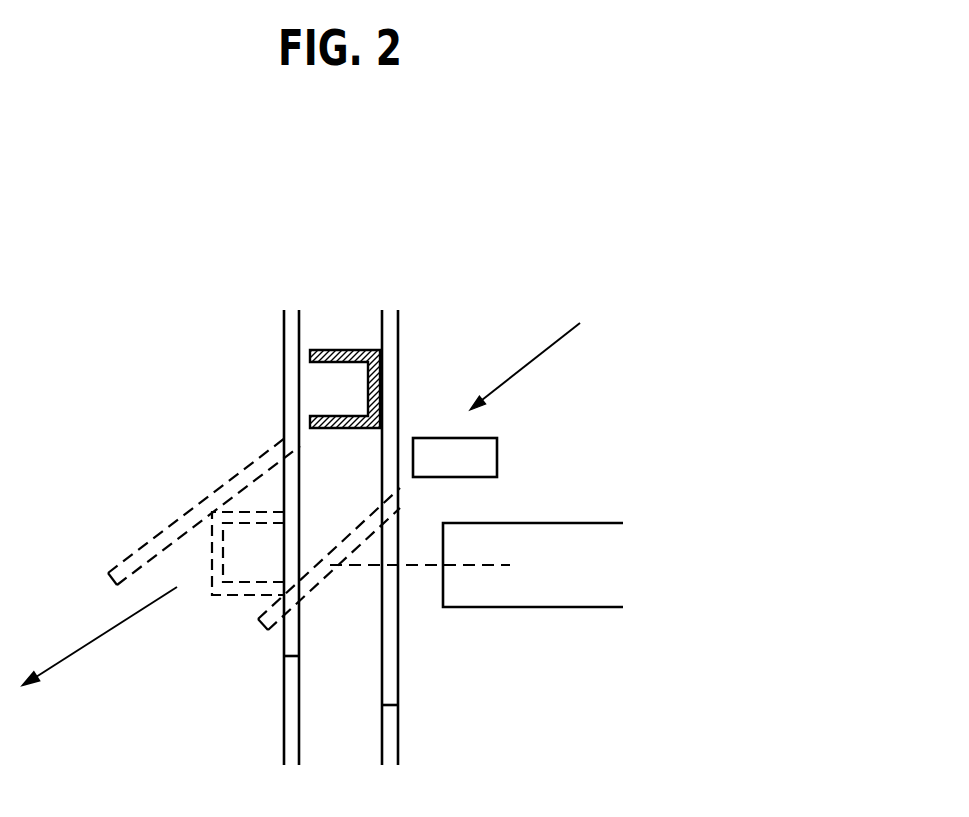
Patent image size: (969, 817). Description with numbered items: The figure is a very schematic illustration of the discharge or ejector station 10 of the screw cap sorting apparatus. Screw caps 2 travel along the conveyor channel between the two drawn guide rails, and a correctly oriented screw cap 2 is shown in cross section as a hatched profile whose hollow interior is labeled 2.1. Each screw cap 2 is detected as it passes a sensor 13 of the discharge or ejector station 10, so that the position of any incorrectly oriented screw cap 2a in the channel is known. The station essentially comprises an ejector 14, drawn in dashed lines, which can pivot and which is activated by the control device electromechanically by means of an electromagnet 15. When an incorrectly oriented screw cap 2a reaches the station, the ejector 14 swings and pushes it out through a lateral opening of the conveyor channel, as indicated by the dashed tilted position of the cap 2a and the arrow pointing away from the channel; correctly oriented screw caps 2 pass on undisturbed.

The screw cap 2 is at (348, 350).
The hollow interior / receiving chamber 2.1 is at (333, 389).
The incorrectly oriented screw cap 2a is at (217, 563).
The discharge or ejector station 10 is at (540, 348).
The sensor 13 is at (482, 452).
The ejector 14 is at (332, 565).
The electromagnet 15 is at (560, 550).